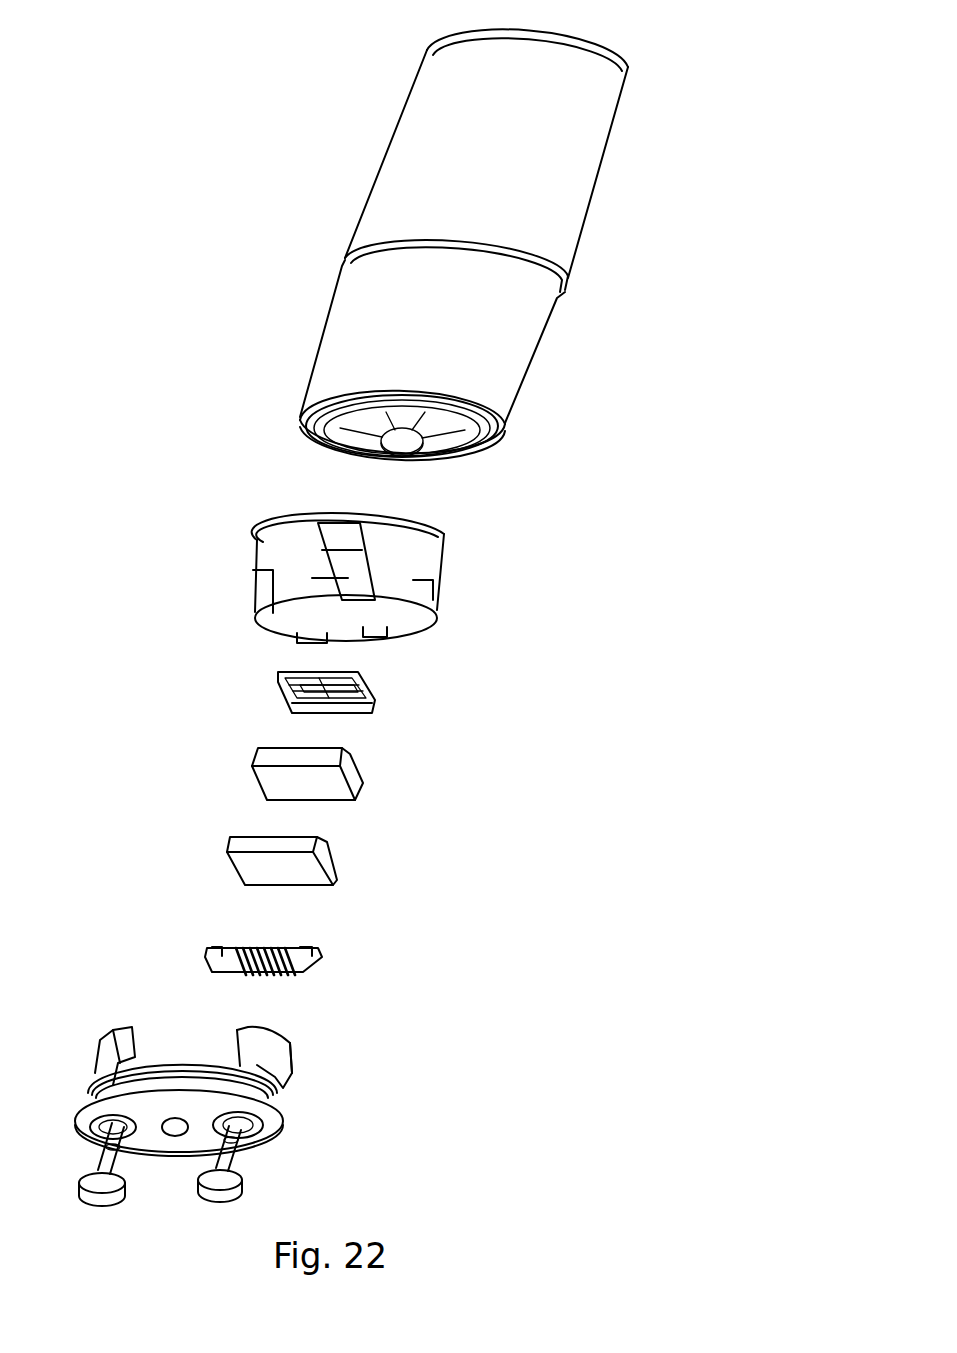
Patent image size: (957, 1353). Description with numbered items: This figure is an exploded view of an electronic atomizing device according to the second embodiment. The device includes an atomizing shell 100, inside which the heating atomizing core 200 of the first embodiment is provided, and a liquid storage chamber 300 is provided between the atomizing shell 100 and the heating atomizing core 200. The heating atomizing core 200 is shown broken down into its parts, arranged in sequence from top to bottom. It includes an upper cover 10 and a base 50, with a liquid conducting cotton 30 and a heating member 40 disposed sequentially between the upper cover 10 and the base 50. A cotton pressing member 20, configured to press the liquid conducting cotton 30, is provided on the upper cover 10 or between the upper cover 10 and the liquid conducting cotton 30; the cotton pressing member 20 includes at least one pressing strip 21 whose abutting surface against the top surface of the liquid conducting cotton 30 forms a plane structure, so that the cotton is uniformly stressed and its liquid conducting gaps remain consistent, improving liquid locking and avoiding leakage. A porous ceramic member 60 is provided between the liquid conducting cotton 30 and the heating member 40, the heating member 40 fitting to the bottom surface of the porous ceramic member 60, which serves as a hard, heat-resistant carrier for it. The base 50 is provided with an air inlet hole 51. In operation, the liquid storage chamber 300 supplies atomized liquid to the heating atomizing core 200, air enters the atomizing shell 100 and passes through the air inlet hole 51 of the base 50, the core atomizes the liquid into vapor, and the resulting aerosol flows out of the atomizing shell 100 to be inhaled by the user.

The atomizing shell 100 is at (590, 146).
The liquid storage chamber 300 is at (540, 356).
The heating atomizing core 200 is at (494, 479).
The upper cover 10 is at (433, 557).
The cotton pressing member 20 is at (363, 672).
The pressing strip 21 is at (378, 688).
The liquid conducting cotton 30 is at (355, 770).
The porous ceramic member 60 is at (330, 857).
The heating member 40 is at (323, 955).
The base 50 is at (280, 1032).
The air inlet hole 51 is at (187, 1123).